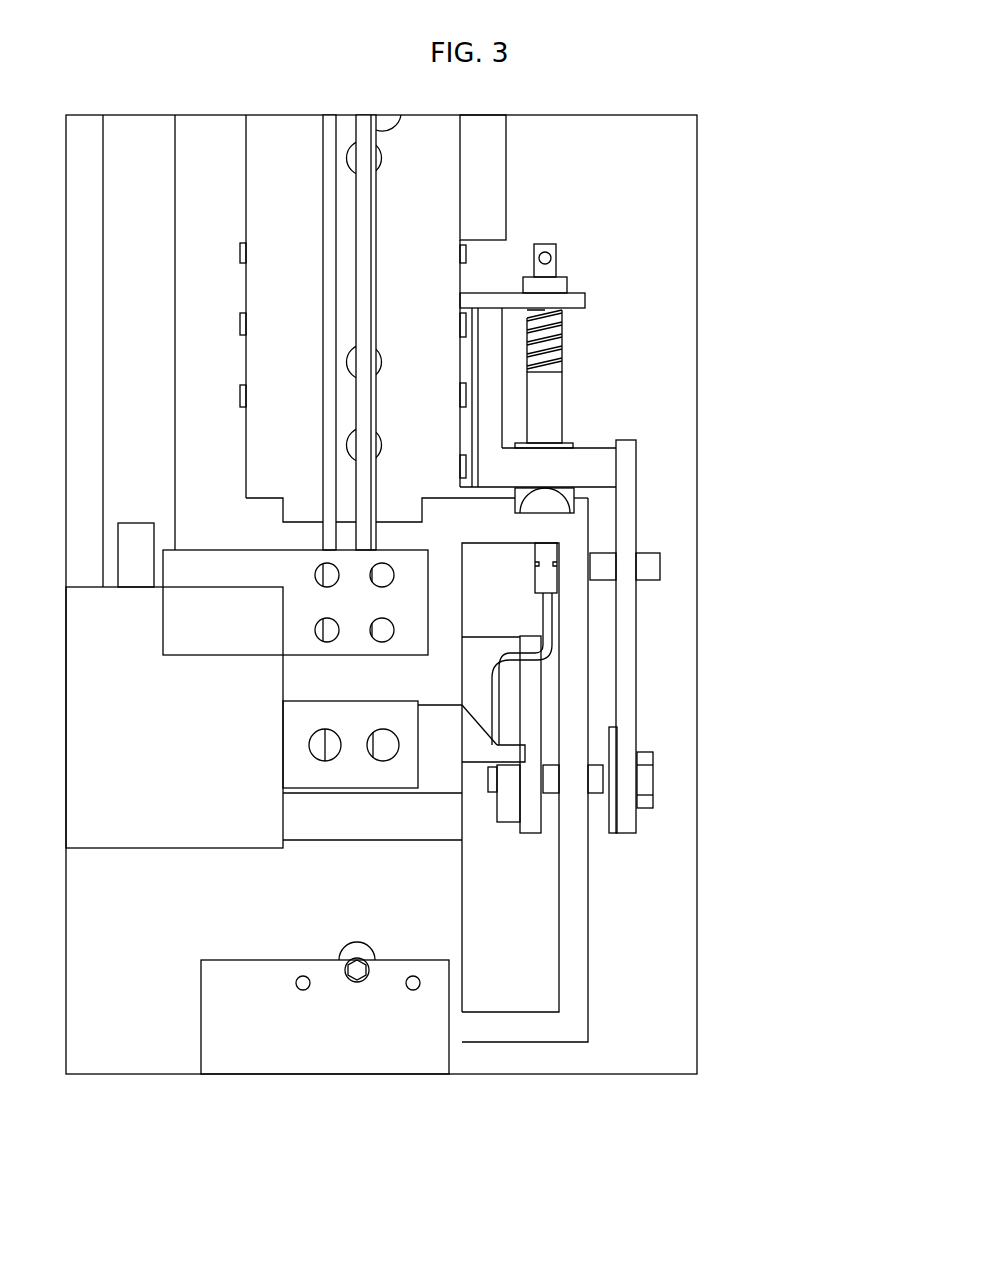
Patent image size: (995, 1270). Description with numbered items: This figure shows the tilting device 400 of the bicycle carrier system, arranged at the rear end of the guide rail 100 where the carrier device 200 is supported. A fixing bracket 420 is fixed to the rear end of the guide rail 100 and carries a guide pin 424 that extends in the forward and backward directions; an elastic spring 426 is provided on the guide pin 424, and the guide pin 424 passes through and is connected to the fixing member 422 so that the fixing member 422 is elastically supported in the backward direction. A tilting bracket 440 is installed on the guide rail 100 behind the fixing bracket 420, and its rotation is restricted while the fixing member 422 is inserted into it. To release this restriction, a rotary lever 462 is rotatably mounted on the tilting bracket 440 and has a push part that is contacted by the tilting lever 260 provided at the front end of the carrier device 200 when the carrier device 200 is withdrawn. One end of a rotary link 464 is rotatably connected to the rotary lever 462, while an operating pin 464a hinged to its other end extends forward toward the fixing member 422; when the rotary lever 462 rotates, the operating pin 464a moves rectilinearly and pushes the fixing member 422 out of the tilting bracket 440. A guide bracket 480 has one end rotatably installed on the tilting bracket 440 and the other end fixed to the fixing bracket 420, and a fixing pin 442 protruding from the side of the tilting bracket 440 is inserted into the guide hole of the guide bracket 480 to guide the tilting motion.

The guide rail 100 is at (415, 235).
The carrier device 200 is at (152, 1048).
The tilting lever 260 is at (443, 777).
The tilting device 400 is at (645, 430).
The fixing bracket 420 is at (565, 423).
The fixing member 422 is at (553, 503).
The guide pin 424 is at (553, 270).
The elastic spring 426 is at (562, 320).
The tilting bracket 440 is at (575, 972).
The fixing pin 442 is at (660, 566).
The rotary lever 462 is at (510, 805).
The rotary link 464 is at (547, 647).
The operating pin 464a is at (547, 587).
The guide bracket 480 is at (628, 737).